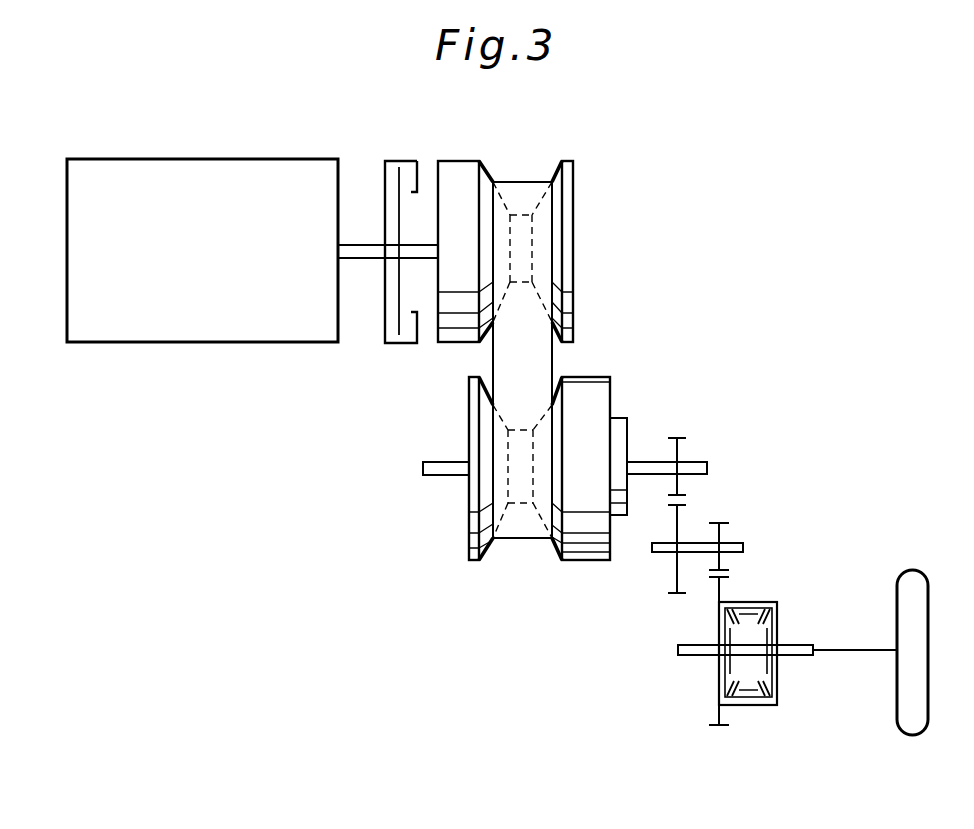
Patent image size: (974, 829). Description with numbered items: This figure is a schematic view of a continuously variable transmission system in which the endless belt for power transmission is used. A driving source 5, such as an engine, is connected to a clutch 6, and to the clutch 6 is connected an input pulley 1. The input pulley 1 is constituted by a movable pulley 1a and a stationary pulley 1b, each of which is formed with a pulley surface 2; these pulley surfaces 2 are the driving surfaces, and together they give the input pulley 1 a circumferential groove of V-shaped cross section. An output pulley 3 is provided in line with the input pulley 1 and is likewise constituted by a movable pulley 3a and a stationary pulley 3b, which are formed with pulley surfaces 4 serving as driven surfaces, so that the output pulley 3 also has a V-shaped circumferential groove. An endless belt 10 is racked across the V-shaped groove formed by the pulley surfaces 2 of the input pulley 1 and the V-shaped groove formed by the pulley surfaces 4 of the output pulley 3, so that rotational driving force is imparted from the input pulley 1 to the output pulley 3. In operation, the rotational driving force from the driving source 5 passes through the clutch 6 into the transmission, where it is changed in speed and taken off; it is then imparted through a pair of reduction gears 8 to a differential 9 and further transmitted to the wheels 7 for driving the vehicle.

The input pulley 1 is at (528, 211).
The movable pulley 1a is at (449, 161).
The stationary pulley 1b is at (571, 161).
The pulley surfaces 2 is at (483, 168).
The output pulley 3 is at (565, 475).
The movable pulley 3a is at (584, 558).
The stationary pulley 3b is at (469, 550).
The pulley surfaces 4 is at (490, 553).
The driving source 5 is at (195, 158).
The clutch 6 is at (392, 160).
The wheels 7 is at (916, 610).
The reduction gears 8 is at (692, 501).
The differential 9 is at (777, 619).
The endless belt 10 is at (553, 279).